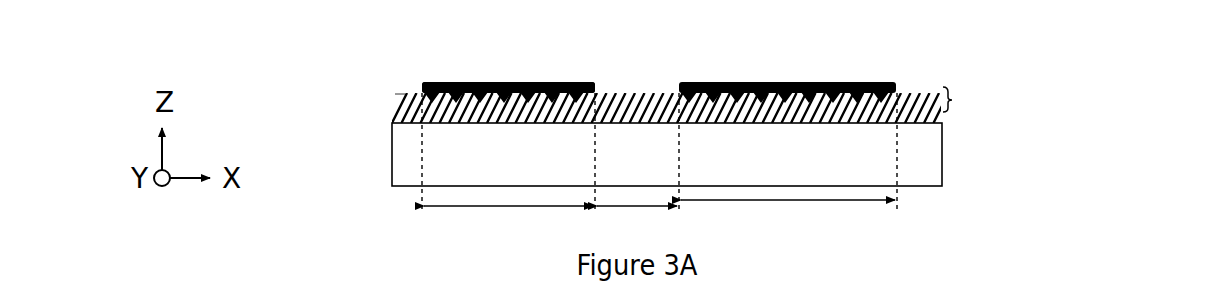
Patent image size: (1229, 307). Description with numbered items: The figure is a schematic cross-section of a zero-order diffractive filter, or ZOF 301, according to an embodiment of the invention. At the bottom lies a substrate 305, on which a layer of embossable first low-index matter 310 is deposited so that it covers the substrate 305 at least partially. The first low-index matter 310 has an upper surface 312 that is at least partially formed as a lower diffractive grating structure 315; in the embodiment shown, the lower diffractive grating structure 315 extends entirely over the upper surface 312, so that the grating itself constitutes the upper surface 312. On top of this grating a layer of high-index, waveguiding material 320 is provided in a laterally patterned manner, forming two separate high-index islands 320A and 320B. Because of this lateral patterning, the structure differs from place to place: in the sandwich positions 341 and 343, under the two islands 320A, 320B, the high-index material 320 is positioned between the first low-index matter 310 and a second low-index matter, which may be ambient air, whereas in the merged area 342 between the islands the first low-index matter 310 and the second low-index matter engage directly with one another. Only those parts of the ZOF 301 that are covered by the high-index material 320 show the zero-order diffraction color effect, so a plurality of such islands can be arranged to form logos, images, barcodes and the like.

The zero-order diffractive filter 301 is at (1010, 134).
The substrate 305 is at (392, 172).
The first low-index matter 310 is at (397, 113).
The upper surface 312 is at (392, 96).
The lower diffractive grating structure 315 is at (973, 97).
The high-index material 320 is at (422, 83).
The high-index island 320A is at (463, 82).
The high-index island 320B is at (765, 82).
The sandwich position 341 is at (508, 227).
The merged area 342 is at (637, 229).
The sandwich position 343 is at (788, 222).